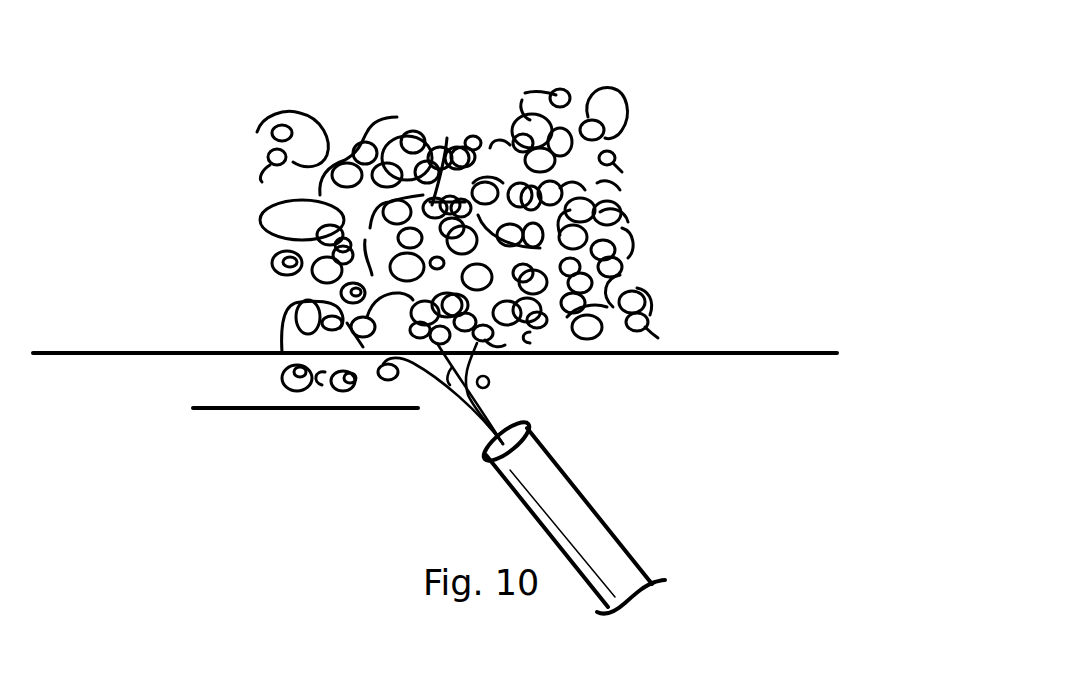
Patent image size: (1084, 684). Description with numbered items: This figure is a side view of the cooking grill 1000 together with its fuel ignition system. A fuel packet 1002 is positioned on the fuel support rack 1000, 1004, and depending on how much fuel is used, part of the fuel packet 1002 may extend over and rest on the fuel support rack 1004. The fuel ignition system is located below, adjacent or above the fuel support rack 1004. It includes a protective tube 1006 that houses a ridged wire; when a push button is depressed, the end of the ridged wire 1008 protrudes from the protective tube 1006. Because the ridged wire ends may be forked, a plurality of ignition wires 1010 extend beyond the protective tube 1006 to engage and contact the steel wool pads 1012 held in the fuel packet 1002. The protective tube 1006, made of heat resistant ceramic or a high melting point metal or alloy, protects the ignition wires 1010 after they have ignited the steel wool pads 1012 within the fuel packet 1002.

The cooking grill 1000 is at (90, 352).
The fuel packet 1002 is at (522, 100).
The fuel support rack 1004 is at (273, 409).
The protective tube 1006 is at (583, 497).
The end of the ridged wire 1008 is at (531, 428).
The ignition wires 1010 is at (483, 405).
The steel wool pads 1012 is at (378, 360).